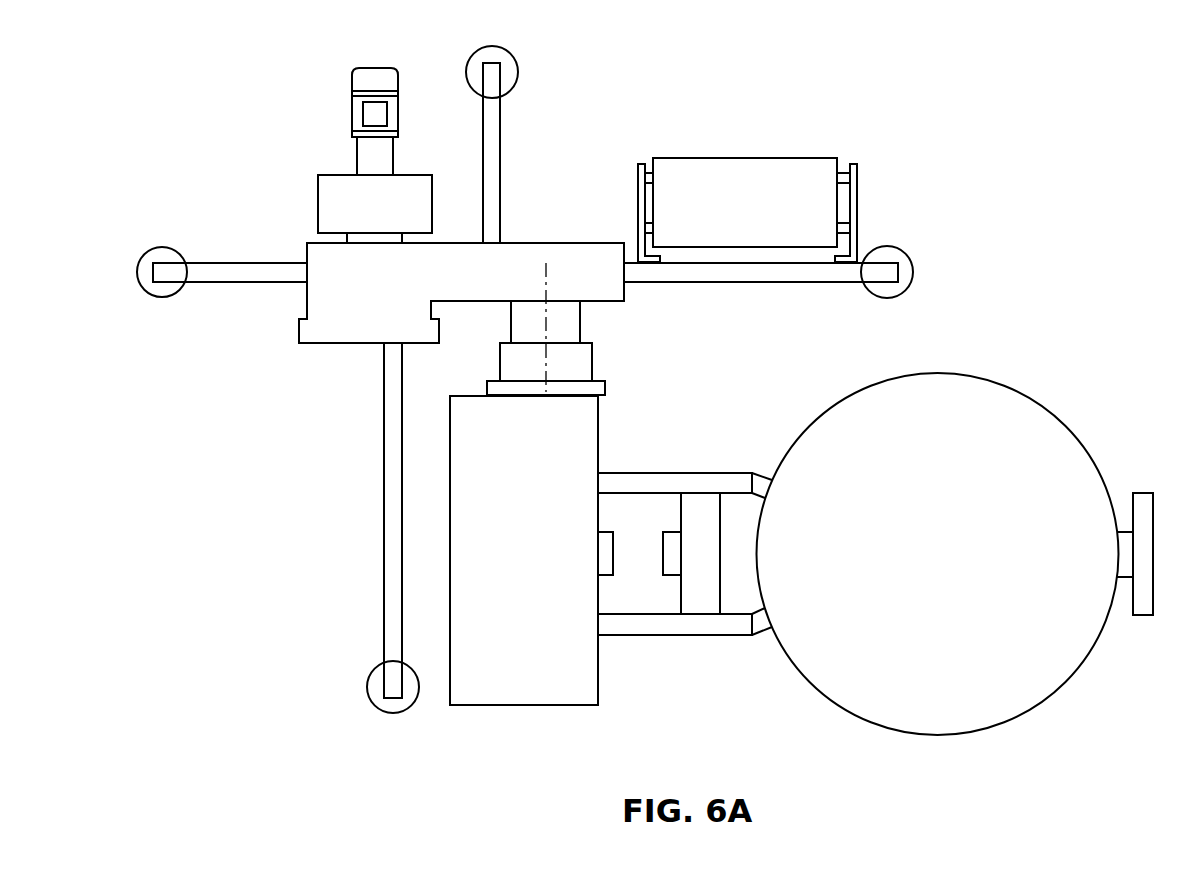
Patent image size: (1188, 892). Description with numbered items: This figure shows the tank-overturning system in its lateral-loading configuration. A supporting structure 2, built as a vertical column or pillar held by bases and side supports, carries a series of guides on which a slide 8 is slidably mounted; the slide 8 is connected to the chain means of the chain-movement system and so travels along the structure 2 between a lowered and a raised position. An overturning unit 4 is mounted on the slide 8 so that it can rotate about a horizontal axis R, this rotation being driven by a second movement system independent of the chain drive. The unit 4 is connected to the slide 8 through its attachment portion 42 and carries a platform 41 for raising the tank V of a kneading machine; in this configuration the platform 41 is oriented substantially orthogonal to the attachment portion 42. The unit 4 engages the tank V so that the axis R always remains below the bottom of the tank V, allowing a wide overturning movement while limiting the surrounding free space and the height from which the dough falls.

The supporting structure 2 is at (515, 253).
The horizontal axis R is at (548, 280).
The slide 8 is at (573, 315).
The attachment portion 42 is at (582, 359).
The overturning unit 4 is at (557, 708).
The platform 41 is at (667, 477).
The tank V is at (1062, 691).